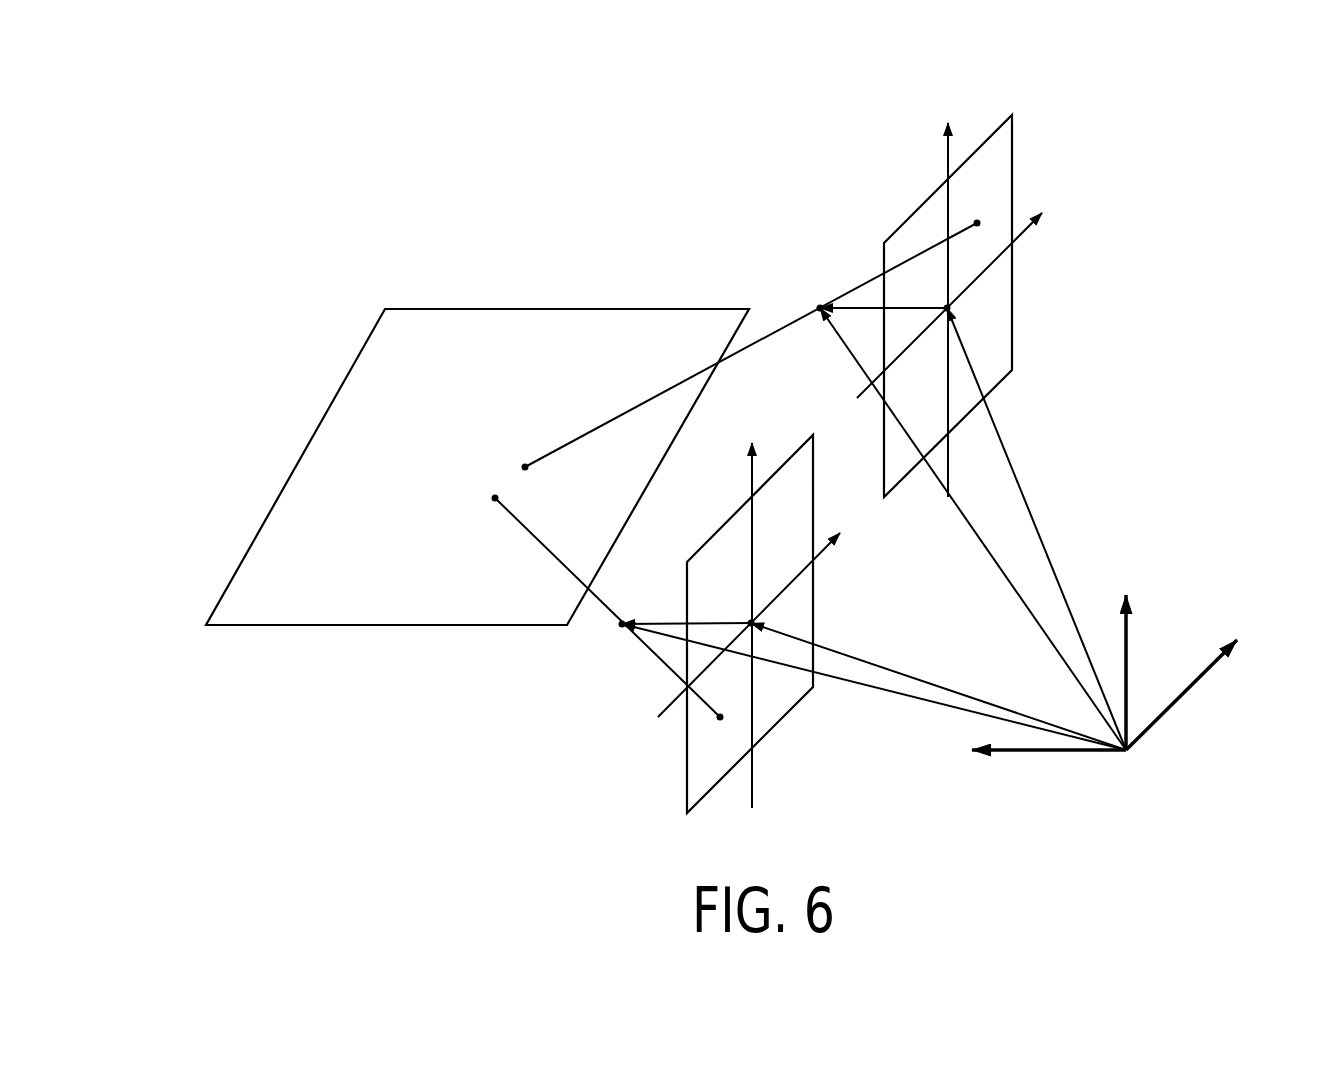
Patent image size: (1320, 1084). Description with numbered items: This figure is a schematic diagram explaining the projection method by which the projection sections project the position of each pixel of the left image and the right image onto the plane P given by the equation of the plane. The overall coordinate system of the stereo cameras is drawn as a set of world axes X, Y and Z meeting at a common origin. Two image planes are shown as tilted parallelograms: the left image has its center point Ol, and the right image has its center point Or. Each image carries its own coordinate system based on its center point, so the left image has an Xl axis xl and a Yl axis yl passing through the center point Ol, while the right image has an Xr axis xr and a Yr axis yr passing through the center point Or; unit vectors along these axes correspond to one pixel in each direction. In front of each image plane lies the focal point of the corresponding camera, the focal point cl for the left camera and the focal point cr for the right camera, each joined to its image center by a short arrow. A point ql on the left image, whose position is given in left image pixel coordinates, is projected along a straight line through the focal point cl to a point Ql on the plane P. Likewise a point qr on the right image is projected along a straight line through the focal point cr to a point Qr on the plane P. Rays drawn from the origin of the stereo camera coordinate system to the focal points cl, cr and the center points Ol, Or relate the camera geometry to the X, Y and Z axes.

The plane P is at (477, 467).
The projected point on plane Qr is at (738, 347).
The projected point on plane Ql is at (590, 600).
The center point of left image Ol is at (906, 624).
The focal point of left camera cl is at (873, 666).
The point on left image ql is at (722, 735).
The Yl axis of left image coordinate system yl is at (753, 607).
The Xl axis of left image coordinate system xl is at (764, 613).
The center point of right image Or is at (1005, 432).
The focal point of right camera cr is at (966, 509).
The point on right image qr is at (986, 206).
The Yr axis of right image coordinate system yr is at (951, 290).
The Xr axis of right image coordinate system xr is at (968, 295).
The Z axis of stereo camera coordinate system Z is at (1127, 656).
The X axis of stereo camera coordinate system X is at (1193, 686).
The Y axis of stereo camera coordinate system Y is at (1037, 752).